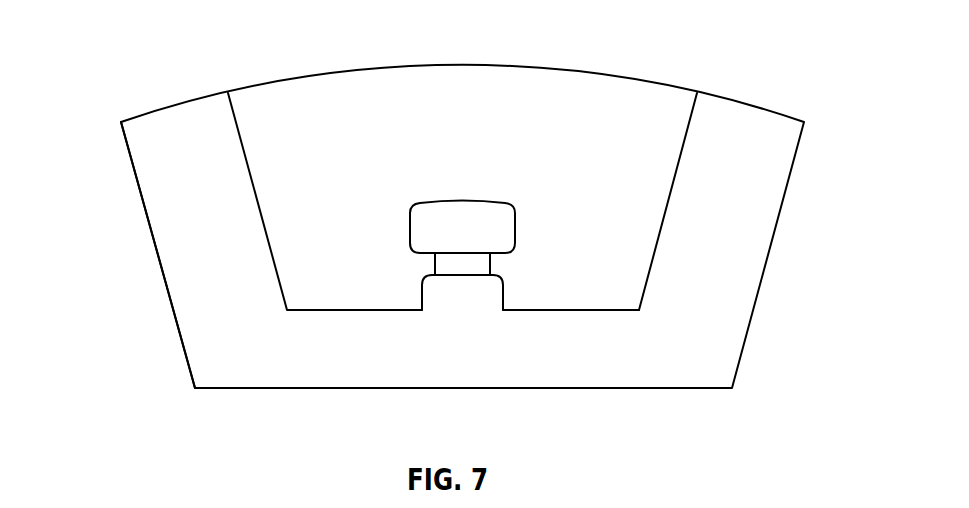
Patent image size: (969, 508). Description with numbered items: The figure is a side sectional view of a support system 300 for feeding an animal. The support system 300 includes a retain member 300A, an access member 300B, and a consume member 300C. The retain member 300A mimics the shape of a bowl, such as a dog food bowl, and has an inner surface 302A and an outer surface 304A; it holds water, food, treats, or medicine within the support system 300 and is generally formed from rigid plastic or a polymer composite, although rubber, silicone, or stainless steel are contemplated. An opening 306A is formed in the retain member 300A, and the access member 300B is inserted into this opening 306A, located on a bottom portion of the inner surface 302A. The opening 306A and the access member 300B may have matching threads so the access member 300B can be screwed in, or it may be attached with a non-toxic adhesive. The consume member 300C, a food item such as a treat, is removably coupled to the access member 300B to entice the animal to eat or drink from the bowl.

The support system 300 is at (831, 38).
The retain member 300A is at (115, 97).
The access member 300B is at (477, 267).
The consume member 300C is at (477, 215).
The inner surface 302A is at (648, 280).
The outer surface 304A is at (178, 332).
The opening 306A is at (468, 277).